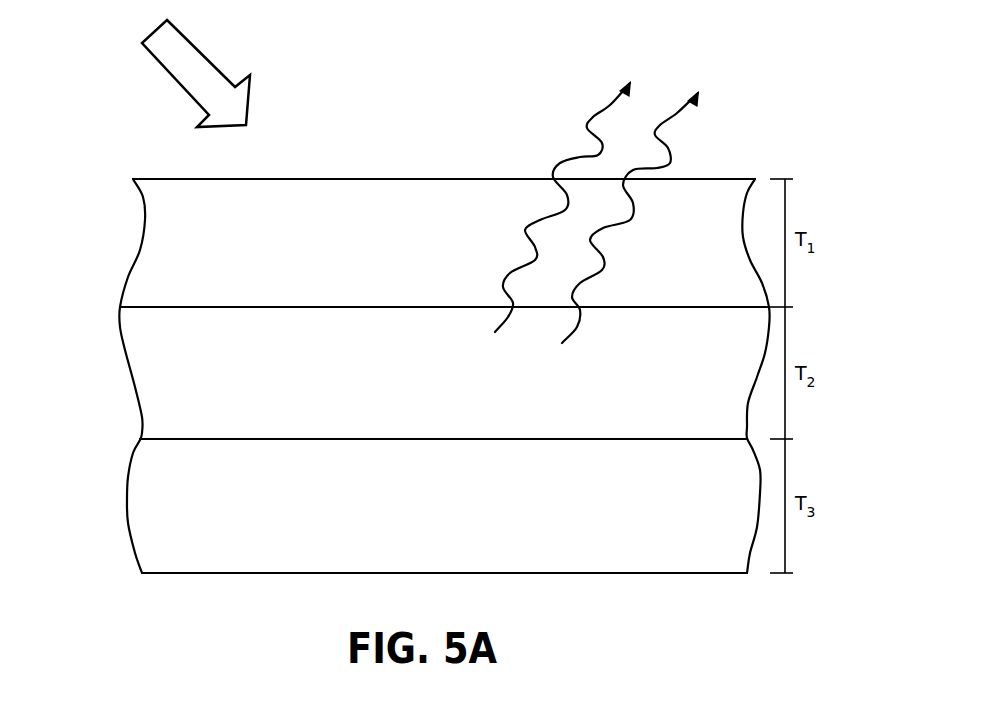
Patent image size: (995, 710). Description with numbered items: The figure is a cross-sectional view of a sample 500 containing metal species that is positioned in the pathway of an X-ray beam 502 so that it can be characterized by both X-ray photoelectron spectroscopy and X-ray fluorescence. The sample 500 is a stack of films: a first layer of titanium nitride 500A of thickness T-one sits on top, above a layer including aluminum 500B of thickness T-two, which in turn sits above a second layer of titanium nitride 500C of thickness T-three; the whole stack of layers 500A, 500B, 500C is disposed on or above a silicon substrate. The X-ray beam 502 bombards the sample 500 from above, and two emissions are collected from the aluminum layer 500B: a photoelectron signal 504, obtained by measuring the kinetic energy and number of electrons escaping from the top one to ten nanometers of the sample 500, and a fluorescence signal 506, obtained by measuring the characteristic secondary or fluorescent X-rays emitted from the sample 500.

The sample 500 is at (145, 150).
The first layer of titanium nitride 500A is at (237, 255).
The layer including aluminum 500B is at (237, 383).
The second layer of titanium nitride 500C is at (237, 528).
The X-ray beam 502 is at (197, 68).
The XPS signal 504 is at (558, 158).
The XRF signal 506 is at (580, 318).